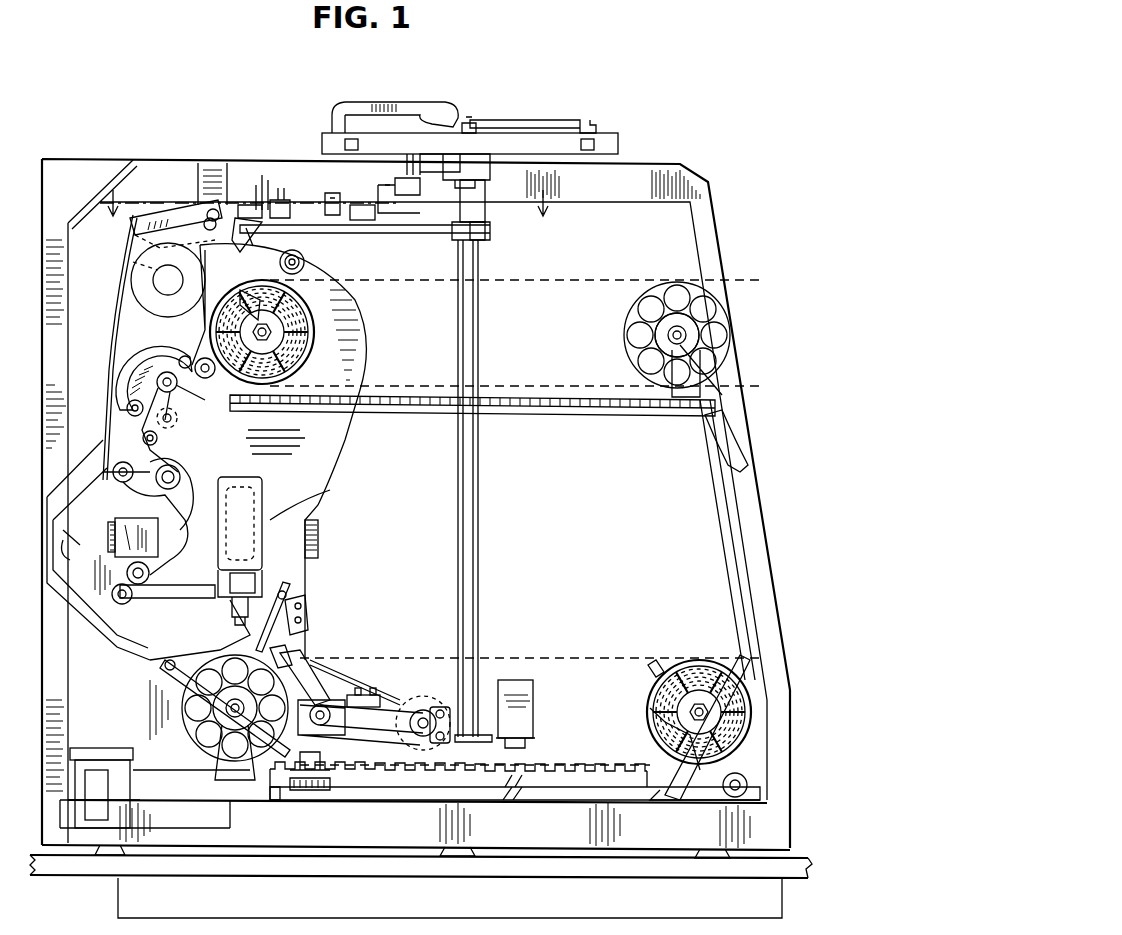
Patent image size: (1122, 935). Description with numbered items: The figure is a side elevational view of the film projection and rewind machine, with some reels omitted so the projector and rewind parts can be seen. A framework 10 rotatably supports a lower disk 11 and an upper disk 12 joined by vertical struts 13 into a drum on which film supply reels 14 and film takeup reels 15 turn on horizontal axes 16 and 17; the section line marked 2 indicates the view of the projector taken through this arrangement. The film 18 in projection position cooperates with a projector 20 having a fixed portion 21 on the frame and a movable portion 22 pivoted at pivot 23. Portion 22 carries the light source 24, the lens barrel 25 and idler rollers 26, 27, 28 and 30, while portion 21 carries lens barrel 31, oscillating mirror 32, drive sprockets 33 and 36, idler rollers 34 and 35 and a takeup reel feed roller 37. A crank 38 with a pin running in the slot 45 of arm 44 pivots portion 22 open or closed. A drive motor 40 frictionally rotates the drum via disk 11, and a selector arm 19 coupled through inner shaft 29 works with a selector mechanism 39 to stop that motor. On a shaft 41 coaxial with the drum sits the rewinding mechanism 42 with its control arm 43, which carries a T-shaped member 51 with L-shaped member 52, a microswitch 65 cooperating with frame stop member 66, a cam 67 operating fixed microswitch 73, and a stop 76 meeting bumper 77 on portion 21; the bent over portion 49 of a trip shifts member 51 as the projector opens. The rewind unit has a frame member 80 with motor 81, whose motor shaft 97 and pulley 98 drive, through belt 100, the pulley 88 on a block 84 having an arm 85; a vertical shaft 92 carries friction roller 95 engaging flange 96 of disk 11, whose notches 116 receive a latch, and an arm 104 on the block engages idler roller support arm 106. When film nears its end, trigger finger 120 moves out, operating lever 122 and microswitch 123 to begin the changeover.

The framework 10 is at (697, 178).
The lower disk 11 is at (582, 775).
The upper disk 12 is at (560, 413).
The struts 13 is at (730, 440).
The film supply reels 14 is at (675, 655).
The film takeup reels 15 is at (312, 302).
The horizontal axis 16 is at (690, 710).
The horizontal axis 17 is at (668, 333).
The film 18 is at (722, 549).
The selector arm 19 is at (474, 118).
The section line 2 is at (326, 218).
The projector 20 is at (353, 272).
The fixed projector portion 21 is at (115, 292).
The movable projector portion 22 is at (362, 343).
The pivot 23 is at (304, 256).
The light source 24 is at (274, 490).
The barrel 25 is at (320, 530).
The idler roller 26 is at (178, 386).
The idler roller 27 is at (158, 438).
The idler roller 28 is at (113, 470).
The inner shaft 29 is at (478, 190).
The idler roller 30 is at (140, 598).
The barrel 31 is at (130, 525).
The oscillating mirror 32 is at (72, 549).
The drive sprocket 33 is at (177, 418).
The idler roller 34 is at (190, 357).
The idler roller 35 is at (172, 466).
The drive sprocket 36 is at (127, 572).
The takeup reel feed roller 37 is at (203, 357).
The crank 38 is at (132, 258).
The selector mechanism 39 is at (618, 145).
The drive motor 40 is at (110, 748).
The shaft 41 is at (479, 581).
The rewinding mechanism 42 is at (400, 660).
The control arm 43 is at (414, 232).
The arm 44 is at (178, 212).
The slot 45 is at (142, 205).
The bent over portion 49 is at (207, 212).
The T-shaped member 51 is at (250, 204).
The L-shaped member 52 is at (240, 252).
The microswitch 65 is at (355, 204).
The stop member 66 is at (330, 193).
The cam 67 is at (388, 208).
The microswitch 73 is at (420, 187).
The stop 76 is at (280, 199).
The bumper 77 is at (262, 175).
The frame member 80 is at (485, 760).
The motor 81 is at (447, 708).
The block 84 is at (332, 720).
The arm 85 is at (362, 694).
The pulley 88 is at (340, 690).
The vertical shaft 92 is at (330, 790).
The friction roller 95 is at (305, 790).
The flange 96 is at (300, 765).
The motor shaft 97 is at (424, 710).
The pulley 98 is at (418, 718).
The belt 100 is at (382, 732).
The arm 104 is at (320, 668).
The idler roller support arm 106 is at (178, 660).
The notches 116 is at (512, 800).
The trigger finger 120 is at (722, 655).
The lever 122 is at (266, 635).
The microswitch 123 is at (308, 618).